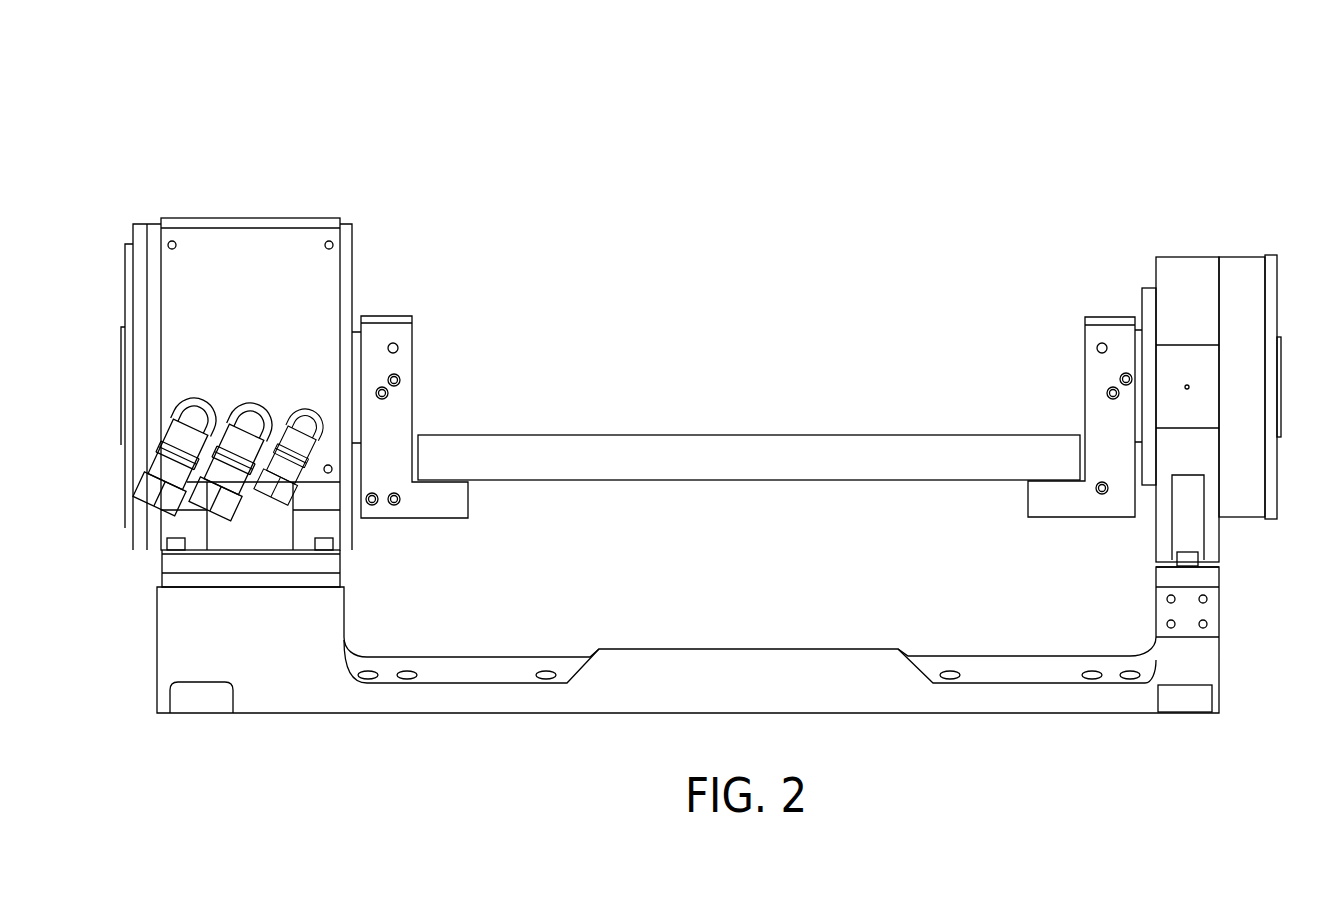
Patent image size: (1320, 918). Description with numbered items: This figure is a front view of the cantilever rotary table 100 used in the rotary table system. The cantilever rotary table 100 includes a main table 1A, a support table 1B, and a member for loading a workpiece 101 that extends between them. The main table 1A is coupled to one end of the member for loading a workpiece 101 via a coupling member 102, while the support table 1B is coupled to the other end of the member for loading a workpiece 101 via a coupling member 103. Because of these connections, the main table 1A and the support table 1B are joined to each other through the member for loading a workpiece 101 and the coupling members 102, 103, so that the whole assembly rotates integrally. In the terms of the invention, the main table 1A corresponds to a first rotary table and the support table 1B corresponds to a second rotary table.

The cantilever rotary table 100 is at (768, 130).
The main table 1A is at (264, 218).
The support table 1B is at (1197, 257).
The member for loading a workpiece 101 is at (745, 435).
The coupling member 102 is at (400, 316).
The coupling member 103 is at (1098, 317).